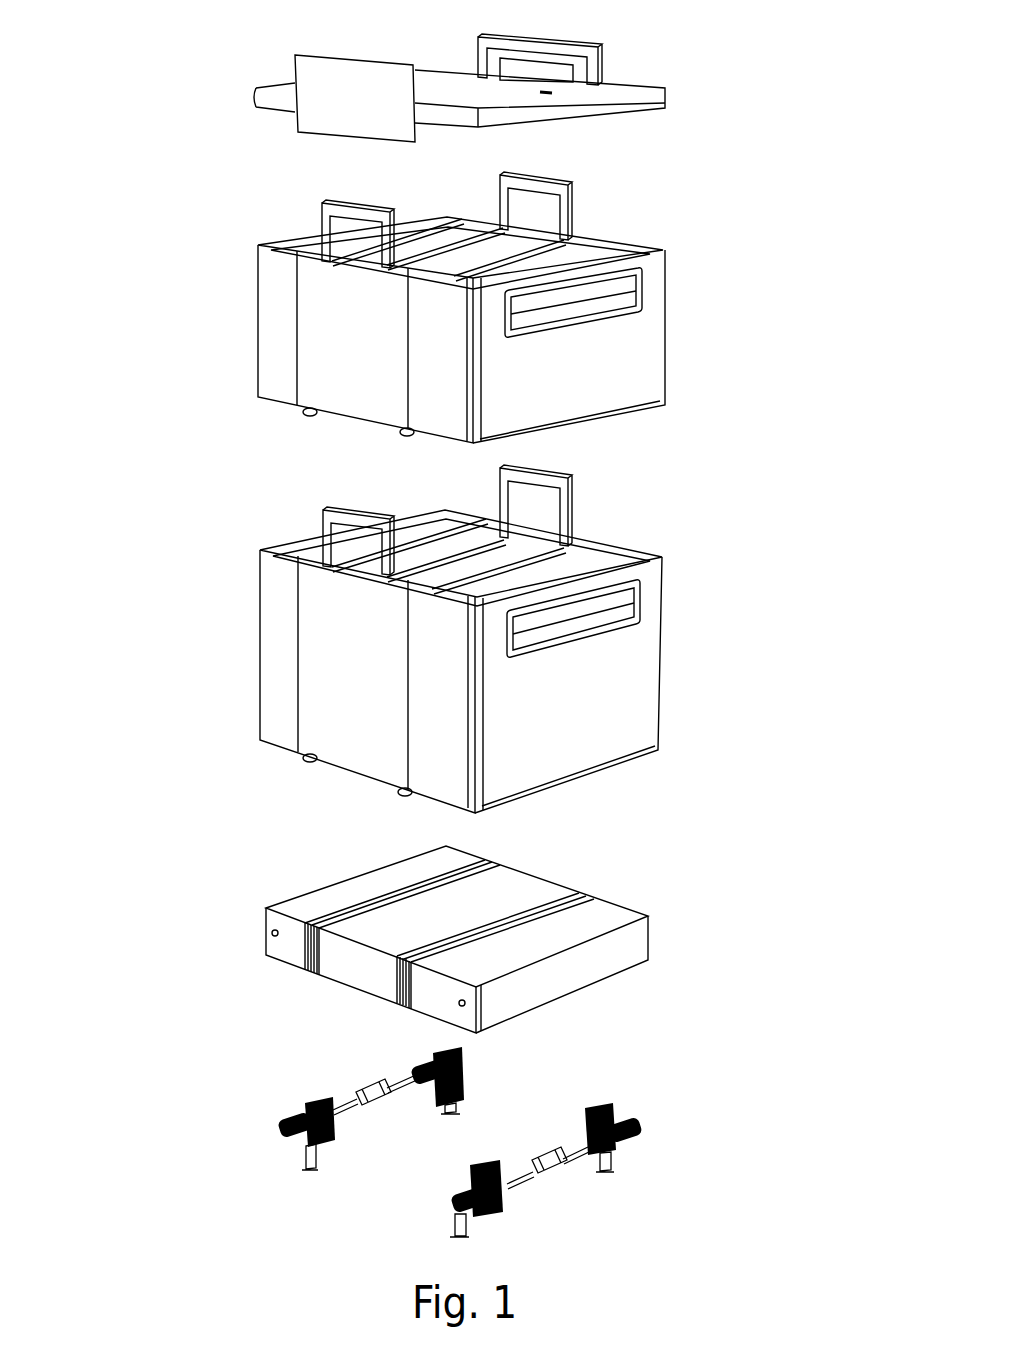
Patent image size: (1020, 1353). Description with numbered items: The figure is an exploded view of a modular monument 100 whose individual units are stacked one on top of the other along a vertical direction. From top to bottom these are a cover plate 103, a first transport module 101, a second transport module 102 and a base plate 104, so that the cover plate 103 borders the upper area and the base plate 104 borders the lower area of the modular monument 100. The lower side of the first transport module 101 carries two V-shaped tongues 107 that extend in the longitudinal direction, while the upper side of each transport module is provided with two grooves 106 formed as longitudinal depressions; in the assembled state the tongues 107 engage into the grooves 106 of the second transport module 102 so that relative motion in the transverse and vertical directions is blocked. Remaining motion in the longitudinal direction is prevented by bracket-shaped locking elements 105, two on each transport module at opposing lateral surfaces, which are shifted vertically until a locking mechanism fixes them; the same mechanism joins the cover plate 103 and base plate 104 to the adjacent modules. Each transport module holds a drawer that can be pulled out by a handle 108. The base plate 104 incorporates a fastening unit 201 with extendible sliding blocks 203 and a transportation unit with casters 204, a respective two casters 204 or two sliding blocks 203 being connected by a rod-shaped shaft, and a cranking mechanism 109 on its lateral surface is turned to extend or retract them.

The modular monument 100 is at (252, 63).
The first transport module 101 is at (681, 253).
The second transport module 102 is at (681, 555).
The cover plate 103 is at (686, 95).
The base plate 104 is at (685, 903).
The locking element 105 is at (325, 208).
The groove 106 is at (418, 232).
The tongue 107 is at (306, 417).
The handle 108 is at (638, 286).
The cranking mechanism 109 is at (272, 936).
The fastening unit 201 is at (260, 1129).
The sliding block 203 is at (452, 1114).
The caster 204 is at (462, 1085).